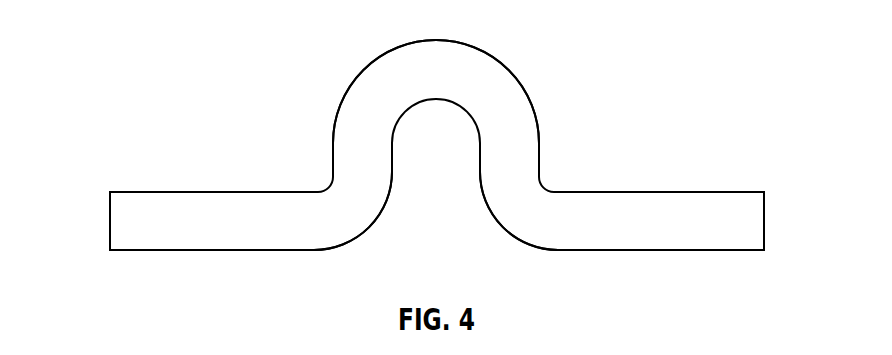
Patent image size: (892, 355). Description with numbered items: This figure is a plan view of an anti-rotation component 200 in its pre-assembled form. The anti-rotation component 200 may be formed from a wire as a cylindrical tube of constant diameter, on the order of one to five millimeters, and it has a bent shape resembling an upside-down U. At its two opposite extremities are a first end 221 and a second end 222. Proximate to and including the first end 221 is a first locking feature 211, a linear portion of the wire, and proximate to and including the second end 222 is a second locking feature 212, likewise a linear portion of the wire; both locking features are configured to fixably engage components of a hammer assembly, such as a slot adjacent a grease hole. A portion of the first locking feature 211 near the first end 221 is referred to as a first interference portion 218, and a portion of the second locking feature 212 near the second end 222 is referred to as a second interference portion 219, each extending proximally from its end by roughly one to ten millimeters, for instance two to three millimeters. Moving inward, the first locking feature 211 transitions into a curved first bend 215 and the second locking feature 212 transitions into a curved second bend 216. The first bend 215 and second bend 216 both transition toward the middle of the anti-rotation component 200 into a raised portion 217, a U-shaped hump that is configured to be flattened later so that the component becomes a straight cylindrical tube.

The anti-rotation component 200 is at (521, 58).
The first locking feature 211 is at (176, 192).
The second locking feature 212 is at (700, 192).
The first bend 215 is at (382, 218).
The second bend 216 is at (510, 237).
The raised portion 217 is at (350, 85).
The first interference portion 218 is at (130, 251).
The second interference portion 219 is at (744, 251).
The first end 221 is at (110, 221).
The second end 222 is at (764, 221).